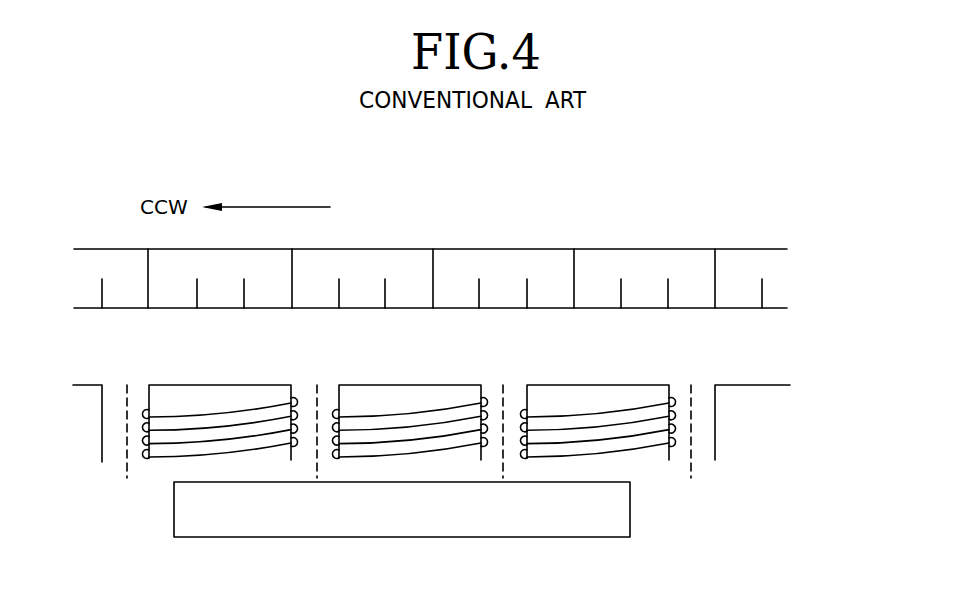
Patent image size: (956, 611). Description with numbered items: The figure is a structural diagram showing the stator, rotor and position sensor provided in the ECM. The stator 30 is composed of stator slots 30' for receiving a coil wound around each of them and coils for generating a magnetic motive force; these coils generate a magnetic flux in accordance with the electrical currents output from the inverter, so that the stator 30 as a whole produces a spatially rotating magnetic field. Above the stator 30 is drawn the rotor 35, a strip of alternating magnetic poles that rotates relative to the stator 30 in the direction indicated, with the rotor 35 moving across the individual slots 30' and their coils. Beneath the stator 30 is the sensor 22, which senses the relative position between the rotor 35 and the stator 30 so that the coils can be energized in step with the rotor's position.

The rotor 35 is at (803, 247).
The stator 30 is at (464, 400).
The stator slot 30' is at (462, 391).
The sensor 22 is at (630, 510).